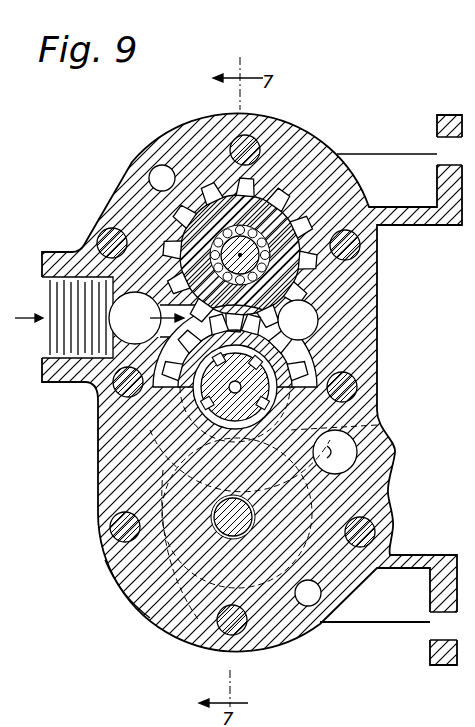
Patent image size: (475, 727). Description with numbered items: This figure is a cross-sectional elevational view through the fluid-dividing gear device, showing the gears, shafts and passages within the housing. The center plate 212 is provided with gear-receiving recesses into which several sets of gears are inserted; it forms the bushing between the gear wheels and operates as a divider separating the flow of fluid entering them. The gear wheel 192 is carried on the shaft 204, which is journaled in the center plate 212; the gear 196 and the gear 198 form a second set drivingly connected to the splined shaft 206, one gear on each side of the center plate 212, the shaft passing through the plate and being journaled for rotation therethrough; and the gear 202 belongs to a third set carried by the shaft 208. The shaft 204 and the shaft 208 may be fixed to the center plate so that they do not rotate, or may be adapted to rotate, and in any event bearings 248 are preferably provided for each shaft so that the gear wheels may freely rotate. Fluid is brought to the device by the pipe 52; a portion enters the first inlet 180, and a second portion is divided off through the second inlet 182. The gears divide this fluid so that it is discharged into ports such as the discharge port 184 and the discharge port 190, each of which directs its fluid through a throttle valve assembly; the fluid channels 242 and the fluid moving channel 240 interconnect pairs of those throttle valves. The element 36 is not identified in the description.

The discharge port 190 is at (96, 452).
The pipe 52 is at (47, 346).
The splined shaft 206 is at (350, 400).
The gear wheel 192 is at (213, 187).
The shaft 204 is at (300, 280).
The bearings 248 is at (312, 262).
The gear 196 is at (322, 367).
The first inlet 180 is at (146, 318).
The discharge port 184 is at (318, 320).
The second inlet 182 is at (347, 452).
The fluid moving channel 240 is at (310, 597).
The fluid channels 242 is at (158, 170).
The shaft 208 is at (248, 513).
The gear 198 is at (393, 424).
The gear 202 is at (200, 624).
The center plate 212 is at (121, 596).
The housing 36 is at (8, 576).